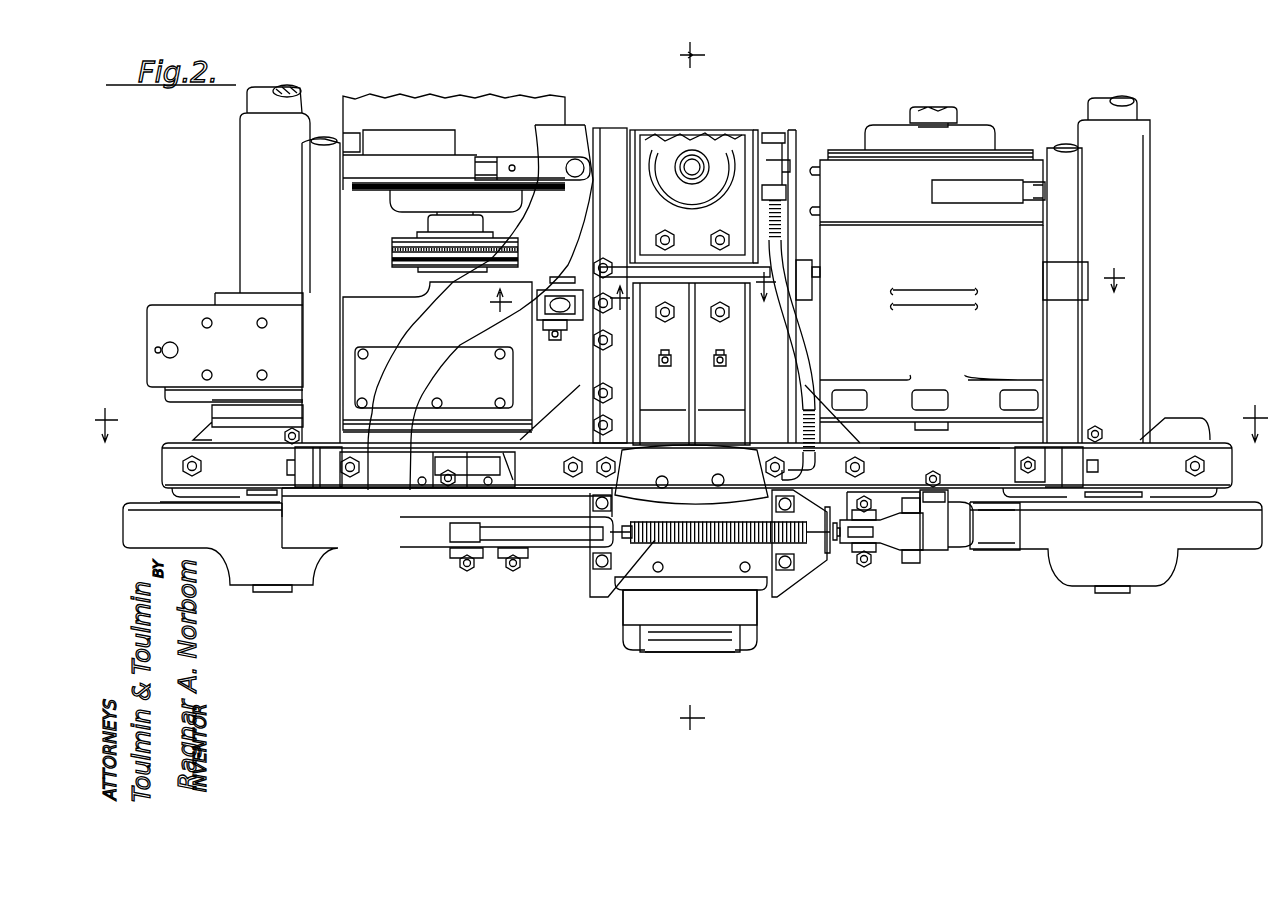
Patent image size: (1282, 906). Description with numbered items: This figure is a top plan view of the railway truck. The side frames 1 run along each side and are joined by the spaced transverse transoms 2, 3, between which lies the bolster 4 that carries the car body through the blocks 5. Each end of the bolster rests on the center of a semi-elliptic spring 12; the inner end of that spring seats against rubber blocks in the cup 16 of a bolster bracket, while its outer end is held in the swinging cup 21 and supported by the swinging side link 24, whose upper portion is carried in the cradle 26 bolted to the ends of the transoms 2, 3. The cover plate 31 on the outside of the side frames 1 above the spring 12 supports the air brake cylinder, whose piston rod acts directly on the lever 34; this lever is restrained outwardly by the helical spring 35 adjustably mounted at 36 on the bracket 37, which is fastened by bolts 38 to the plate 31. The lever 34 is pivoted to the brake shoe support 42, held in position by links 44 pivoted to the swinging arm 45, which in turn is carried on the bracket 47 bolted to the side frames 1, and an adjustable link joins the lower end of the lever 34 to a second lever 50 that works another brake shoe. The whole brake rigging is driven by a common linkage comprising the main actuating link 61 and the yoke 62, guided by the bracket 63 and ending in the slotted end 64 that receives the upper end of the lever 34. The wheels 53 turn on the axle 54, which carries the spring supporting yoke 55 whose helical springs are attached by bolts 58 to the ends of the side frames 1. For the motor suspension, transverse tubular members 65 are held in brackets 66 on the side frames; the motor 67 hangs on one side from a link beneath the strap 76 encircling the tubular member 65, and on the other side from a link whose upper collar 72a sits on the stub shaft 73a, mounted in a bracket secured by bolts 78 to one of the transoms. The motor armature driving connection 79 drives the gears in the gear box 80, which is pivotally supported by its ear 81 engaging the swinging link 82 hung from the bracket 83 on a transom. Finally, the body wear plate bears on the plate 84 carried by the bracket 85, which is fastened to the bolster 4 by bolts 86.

The side frames 1 is at (898, 453).
The transom 2 is at (792, 130).
The transom 3 is at (690, 55).
The bolster 4 is at (712, 130).
The blocks 5 is at (742, 135).
The semi-elliptic spring 12 is at (678, 640).
The cup 16 is at (680, 435).
The swinging cup 21 is at (735, 652).
The swinging side link 24 is at (632, 645).
The cradle 26 is at (762, 590).
The cover plate 31 is at (720, 545).
The lever 34 is at (580, 540).
The helical spring 35 is at (660, 540).
The adjustable mounting 36 is at (820, 570).
The bracket 37 is at (830, 560).
The bolts 38 is at (775, 505).
The brake shoe support 42 is at (514, 568).
The links 44 is at (468, 560).
The swinging arm 45 is at (937, 535).
The bracket 47 is at (950, 495).
The lever 50 is at (858, 560).
The wheels 53 is at (298, 538).
The axle 54 is at (268, 593).
The spring supporting yoke 55 is at (205, 435).
The bolts 58 is at (185, 467).
The main actuating link 61 is at (512, 165).
The yoke 62 is at (572, 128).
The bracket 63 is at (465, 470).
The slotted end 64 is at (450, 545).
The transverse tubular members 65 is at (282, 228).
The bracket 66 is at (295, 475).
The motor 67 is at (430, 102).
The upper collar 72a is at (810, 258).
The stub shaft 73a is at (822, 270).
The strap 76 is at (1072, 270).
The bolts 78 is at (798, 318).
The motor armature driving connection 79 is at (932, 108).
The gear box 80 is at (200, 338).
The ear 81 is at (525, 340).
The swinging link 82 is at (600, 275).
The bracket 83 is at (583, 320).
The plate 84 is at (691, 474).
The bracket 85 is at (685, 356).
The bolts 86 is at (712, 362).